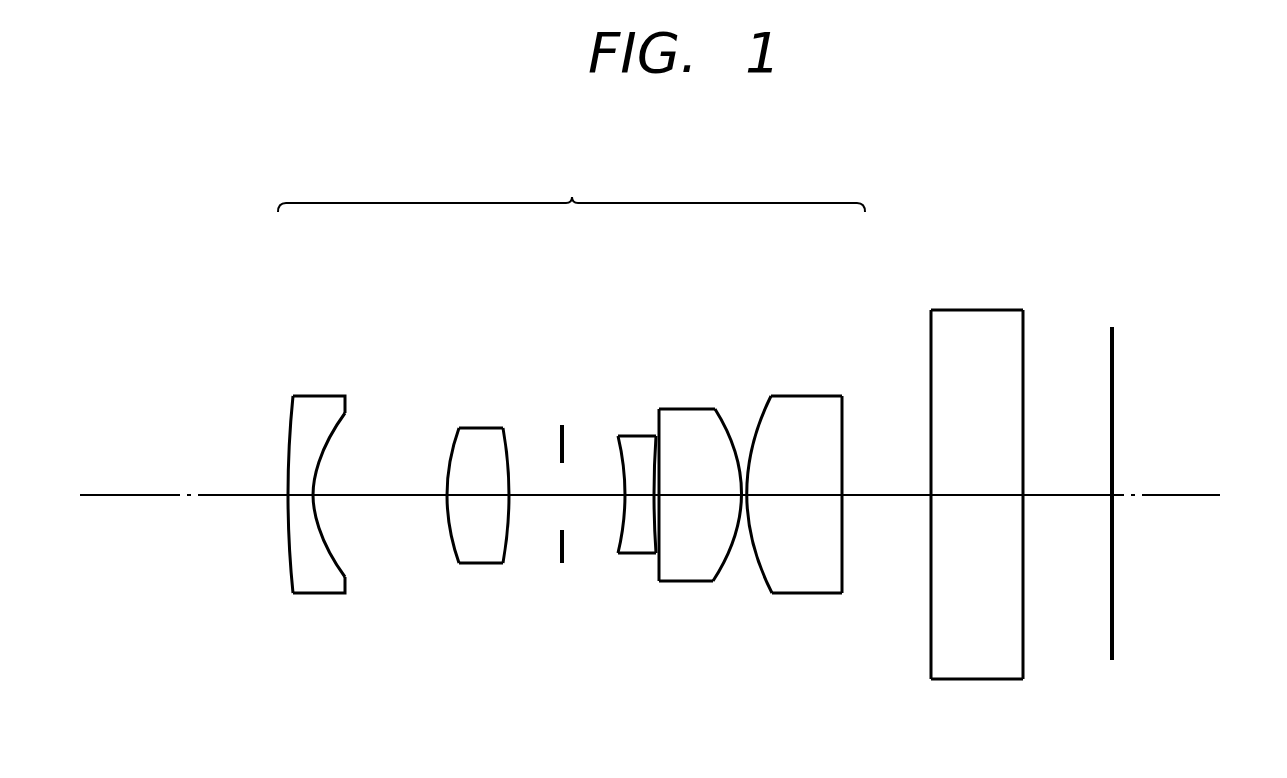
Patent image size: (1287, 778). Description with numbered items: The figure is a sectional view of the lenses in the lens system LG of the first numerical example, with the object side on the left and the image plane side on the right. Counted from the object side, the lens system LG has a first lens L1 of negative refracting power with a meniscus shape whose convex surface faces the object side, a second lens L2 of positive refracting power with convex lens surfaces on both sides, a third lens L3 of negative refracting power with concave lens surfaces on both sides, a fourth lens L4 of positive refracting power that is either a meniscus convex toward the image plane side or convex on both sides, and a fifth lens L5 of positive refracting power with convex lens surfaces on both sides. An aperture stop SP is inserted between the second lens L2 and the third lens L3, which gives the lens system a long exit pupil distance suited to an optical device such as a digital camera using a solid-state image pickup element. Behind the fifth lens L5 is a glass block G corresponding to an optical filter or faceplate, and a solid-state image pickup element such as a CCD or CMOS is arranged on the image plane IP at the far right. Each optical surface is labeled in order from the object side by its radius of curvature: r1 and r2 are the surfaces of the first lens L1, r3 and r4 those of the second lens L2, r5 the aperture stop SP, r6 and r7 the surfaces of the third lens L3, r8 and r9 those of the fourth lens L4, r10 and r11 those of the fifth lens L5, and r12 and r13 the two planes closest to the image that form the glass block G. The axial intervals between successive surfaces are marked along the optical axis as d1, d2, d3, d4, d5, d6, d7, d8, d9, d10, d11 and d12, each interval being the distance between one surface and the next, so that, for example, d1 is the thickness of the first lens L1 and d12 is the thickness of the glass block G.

The lens system LG is at (571, 189).
The first lens L1 is at (308, 432).
The second lens L2 is at (470, 433).
The third lens L3 is at (629, 408).
The fourth lens L4 is at (703, 417).
The fifth lens L5 is at (815, 420).
The aperture stop SP is at (564, 434).
The glass block G is at (982, 427).
The image plane IP is at (1112, 373).
The radius of curvature of the first surface r1 is at (290, 393).
The radius of curvature of the second surface r2 is at (347, 393).
The radius of curvature of the third surface r3 is at (458, 425).
The radius of curvature of the fourth surface r4 is at (505, 427).
The radius of curvature of the fifth surface r5 is at (562, 425).
The radius of curvature of the sixth surface r6 is at (618, 435).
The radius of curvature of the seventh surface r7 is at (652, 435).
The radius of curvature of the eighth surface r8 is at (663, 407).
The radius of curvature of the ninth surface r9 is at (717, 408).
The radius of curvature of the tenth surface r10 is at (770, 397).
The radius of curvature of the eleventh surface r11 is at (842, 395).
The radius of curvature of the twelfth surface r12 is at (931, 310).
The radius of curvature of the thirteenth surface r13 is at (1025, 310).
The interval between the first and second surfaces d1 is at (300, 495).
The interval between the second and third surfaces d2 is at (397, 495).
The interval between the third and fourth surfaces d3 is at (483, 495).
The interval between the fourth and fifth surfaces d4 is at (536, 495).
The interval between the fifth and sixth surfaces d5 is at (595, 495).
The interval between the sixth and seventh surfaces d6 is at (640, 495).
The interval between the seventh and eighth surfaces d7 is at (654, 495).
The interval between the eighth and ninth surfaces d8 is at (695, 495).
The interval between the ninth and tenth surfaces d9 is at (750, 495).
The interval between the tenth and eleventh surfaces d10 is at (805, 495).
The interval between the eleventh and twelfth surfaces d11 is at (883, 495).
The interval between the twelfth and thirteenth surfaces d12 is at (983, 495).